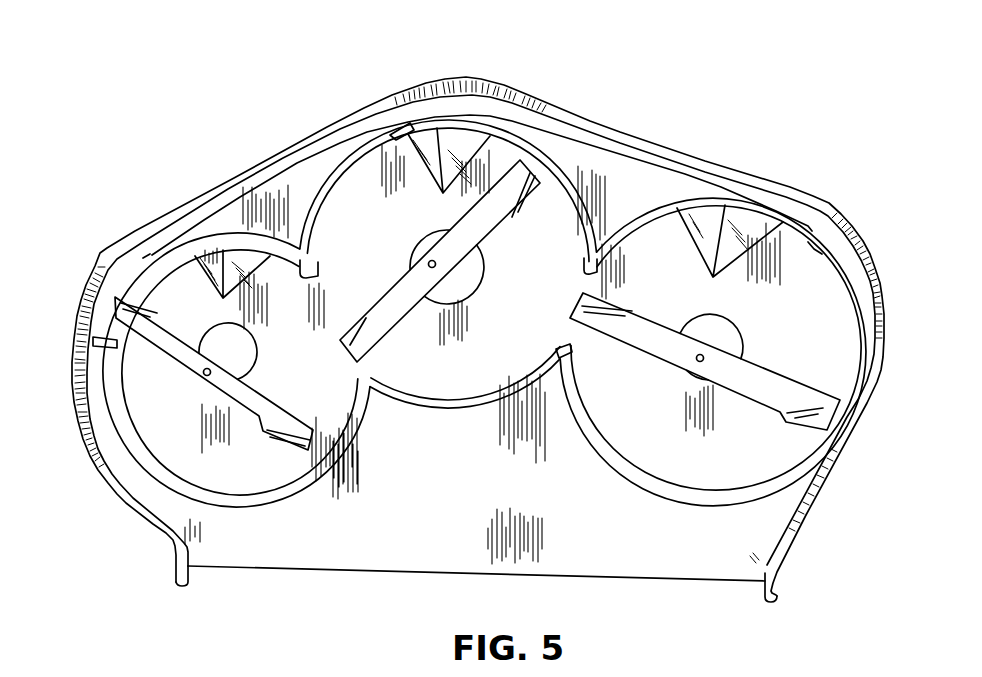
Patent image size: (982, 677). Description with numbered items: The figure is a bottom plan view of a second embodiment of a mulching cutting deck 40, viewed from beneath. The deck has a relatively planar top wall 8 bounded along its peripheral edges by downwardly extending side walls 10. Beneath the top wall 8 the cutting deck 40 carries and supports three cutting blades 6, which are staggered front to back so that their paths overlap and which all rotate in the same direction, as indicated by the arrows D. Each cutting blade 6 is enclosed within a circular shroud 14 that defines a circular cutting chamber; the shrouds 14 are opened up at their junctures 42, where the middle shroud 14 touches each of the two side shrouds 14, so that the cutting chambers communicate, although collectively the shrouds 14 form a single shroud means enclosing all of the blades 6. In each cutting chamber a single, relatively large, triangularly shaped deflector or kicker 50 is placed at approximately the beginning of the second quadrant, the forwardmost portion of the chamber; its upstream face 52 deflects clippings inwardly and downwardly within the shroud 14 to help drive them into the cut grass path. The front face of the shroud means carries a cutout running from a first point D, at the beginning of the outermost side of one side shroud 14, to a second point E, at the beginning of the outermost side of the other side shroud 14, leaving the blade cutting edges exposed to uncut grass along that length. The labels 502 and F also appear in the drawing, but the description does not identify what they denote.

The cutting blade 6 is at (160, 343).
The top wall 8 is at (397, 463).
The side walls 10 is at (543, 107).
The shroud 14 is at (220, 490).
The cutting deck 40 is at (475, 80).
The junctures 42 is at (336, 316).
The kicker 50 is at (430, 175).
The upstream face 52 is at (477, 137).
The wiper tip 502 is at (219, 288).
The blade rotation arrows D is at (302, 374).
The second point E is at (820, 250).
The rim portion F is at (147, 257).